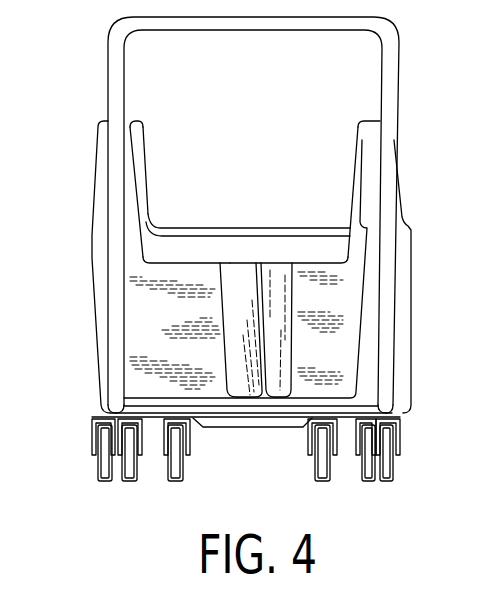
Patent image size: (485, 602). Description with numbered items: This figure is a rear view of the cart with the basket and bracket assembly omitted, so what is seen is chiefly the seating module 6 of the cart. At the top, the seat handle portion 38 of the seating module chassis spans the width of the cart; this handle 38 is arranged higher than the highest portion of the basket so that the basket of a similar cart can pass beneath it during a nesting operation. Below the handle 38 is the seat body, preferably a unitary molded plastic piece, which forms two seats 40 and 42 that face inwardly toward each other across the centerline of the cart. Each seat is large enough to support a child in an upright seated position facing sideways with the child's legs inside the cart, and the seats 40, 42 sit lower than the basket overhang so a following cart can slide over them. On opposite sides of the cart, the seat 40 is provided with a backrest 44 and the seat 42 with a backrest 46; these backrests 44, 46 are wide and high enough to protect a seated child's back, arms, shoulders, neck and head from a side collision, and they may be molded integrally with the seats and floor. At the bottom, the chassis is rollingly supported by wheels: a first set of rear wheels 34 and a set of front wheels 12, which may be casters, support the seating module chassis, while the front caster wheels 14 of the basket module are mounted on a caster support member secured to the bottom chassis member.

The seating module 6 is at (75, 163).
The seat handle portion 38 is at (243, 32).
The backrest 46 is at (130, 118).
The backrest 44 is at (368, 120).
The seat 42 is at (182, 262).
The seat 40 is at (327, 263).
The front caster wheels 14 is at (170, 474).
The front wheels 12 is at (363, 478).
The rear wheels 34 is at (391, 467).